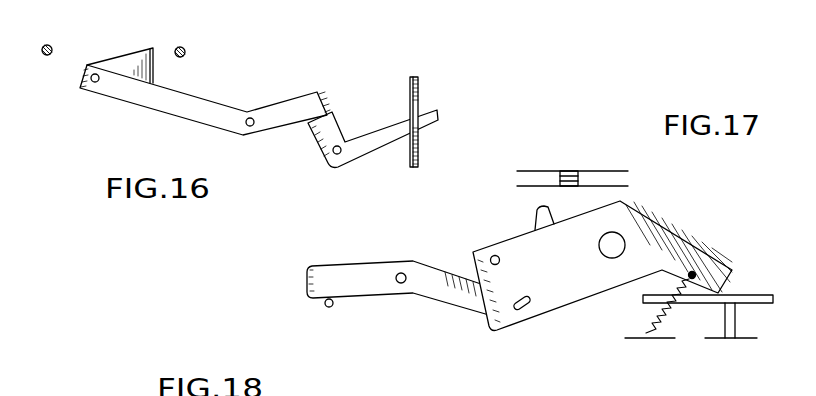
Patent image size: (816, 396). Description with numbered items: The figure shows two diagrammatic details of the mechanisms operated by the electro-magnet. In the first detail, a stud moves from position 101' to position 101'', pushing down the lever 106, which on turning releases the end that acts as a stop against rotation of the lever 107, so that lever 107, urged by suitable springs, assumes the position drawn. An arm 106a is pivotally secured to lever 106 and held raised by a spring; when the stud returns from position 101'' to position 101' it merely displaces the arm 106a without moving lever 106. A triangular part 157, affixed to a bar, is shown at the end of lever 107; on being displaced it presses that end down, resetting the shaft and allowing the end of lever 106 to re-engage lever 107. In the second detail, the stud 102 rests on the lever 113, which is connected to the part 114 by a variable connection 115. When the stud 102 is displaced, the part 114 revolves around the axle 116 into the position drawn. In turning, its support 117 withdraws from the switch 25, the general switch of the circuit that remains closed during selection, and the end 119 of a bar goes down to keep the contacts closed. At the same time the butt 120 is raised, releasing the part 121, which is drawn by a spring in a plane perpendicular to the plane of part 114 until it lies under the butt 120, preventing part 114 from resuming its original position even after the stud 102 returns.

In FIG. 16, the lever 106 is at (197, 120).
In FIG. 16, the arm 106a is at (140, 52).
In FIG. 16, the stud position 101'' is at (64, 38).
In FIG. 16, the stud position 101' is at (197, 39).
In FIG. 16, the lever 107 is at (362, 151).
In FIG. 16, the triangular part 157 is at (418, 102).
In FIG. 17, the switch 25 is at (585, 168).
In FIG. 17, the lever 113 is at (367, 268).
In FIG. 17, the stud 102 is at (328, 307).
In FIG. 17, the part 114 is at (685, 250).
In FIG. 17, the support 117 is at (535, 213).
In FIG. 17, the end of bar 119 is at (500, 260).
In FIG. 17, the axle 116 is at (599, 248).
In FIG. 17, the variable connection 115 is at (516, 297).
In FIG. 17, the butt 120 is at (728, 275).
In FIG. 17, the part 121 is at (752, 297).